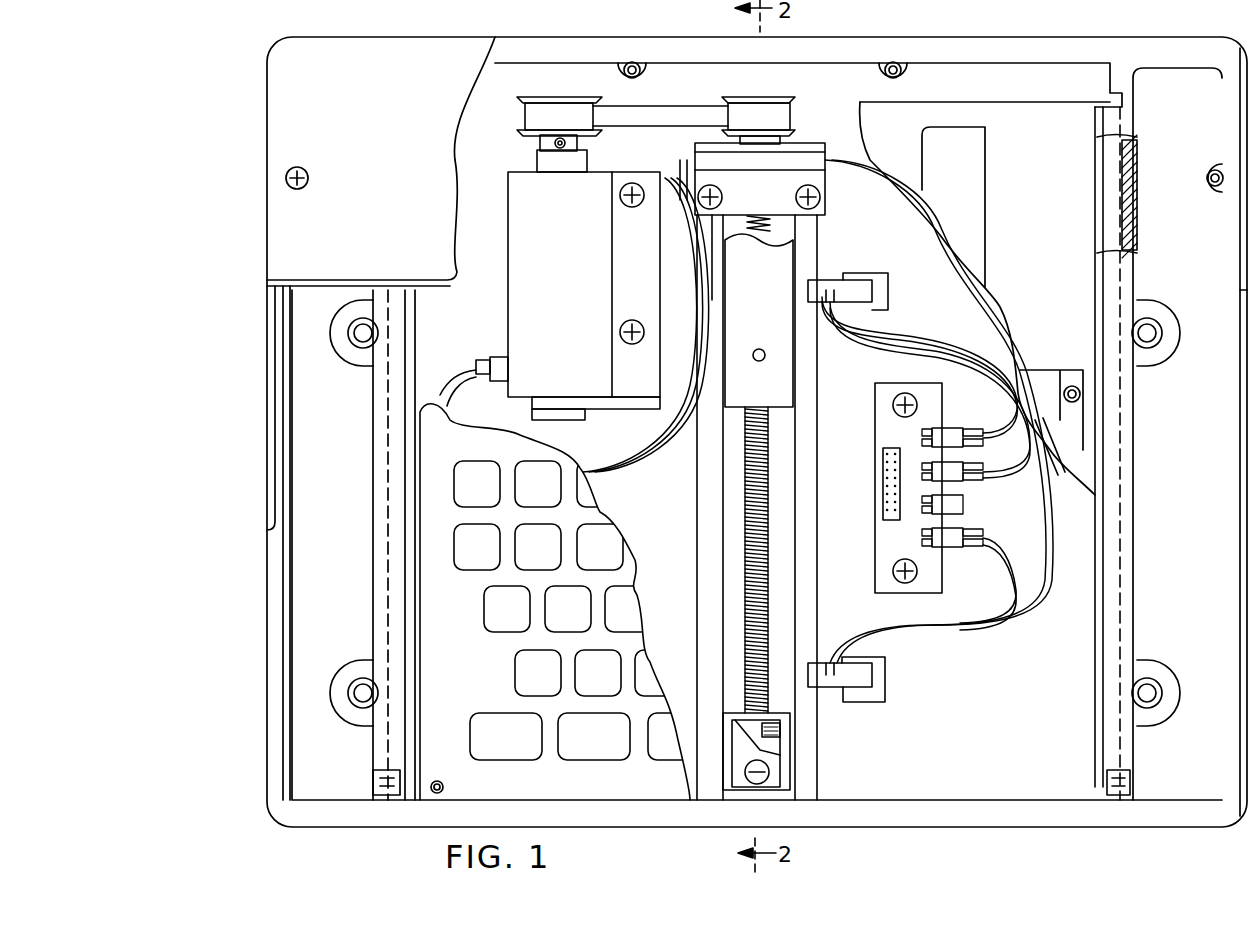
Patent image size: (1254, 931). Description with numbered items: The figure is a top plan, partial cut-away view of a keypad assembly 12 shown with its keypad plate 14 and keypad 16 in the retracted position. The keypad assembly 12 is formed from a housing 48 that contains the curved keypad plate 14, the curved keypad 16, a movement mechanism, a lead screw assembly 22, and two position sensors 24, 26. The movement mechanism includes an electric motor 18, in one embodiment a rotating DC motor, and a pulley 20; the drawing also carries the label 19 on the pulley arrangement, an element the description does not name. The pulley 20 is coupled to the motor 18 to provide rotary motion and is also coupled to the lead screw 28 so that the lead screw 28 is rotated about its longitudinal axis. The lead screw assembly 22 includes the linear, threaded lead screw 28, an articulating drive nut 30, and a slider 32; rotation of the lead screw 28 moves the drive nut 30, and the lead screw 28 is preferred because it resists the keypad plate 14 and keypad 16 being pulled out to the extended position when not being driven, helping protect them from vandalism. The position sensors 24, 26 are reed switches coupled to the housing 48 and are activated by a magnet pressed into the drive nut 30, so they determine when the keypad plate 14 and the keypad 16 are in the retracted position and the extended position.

The keypad assembly 12 is at (250, 105).
The keypad plate 14 is at (1067, 301).
The keypad 16 is at (497, 647).
The electric motor 18 is at (533, 213).
The pulley 19 is at (558, 88).
The pulley 20 is at (612, 113).
The lead screw assembly 22 is at (825, 730).
The position sensor 24 is at (850, 297).
The position sensor 26 is at (858, 678).
The lead screw 28 is at (775, 605).
The drive nut 30 is at (780, 243).
The slider 32 is at (748, 280).
The housing 48 is at (262, 427).